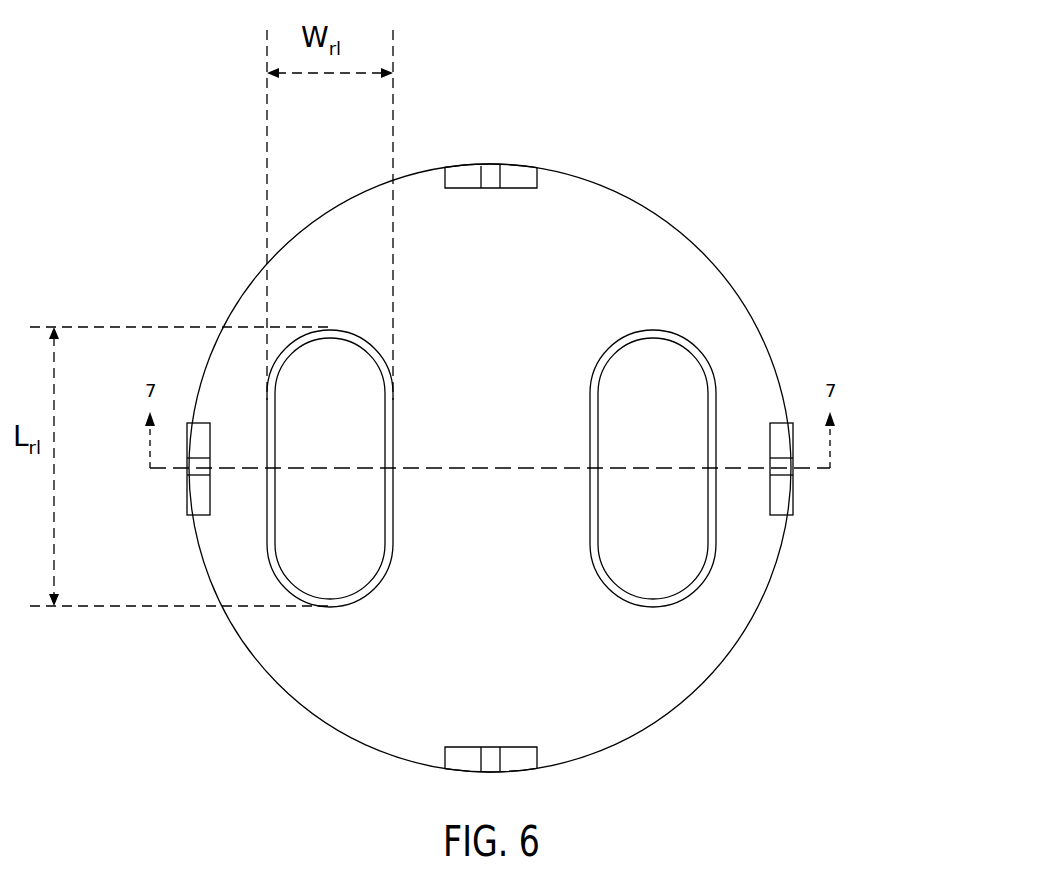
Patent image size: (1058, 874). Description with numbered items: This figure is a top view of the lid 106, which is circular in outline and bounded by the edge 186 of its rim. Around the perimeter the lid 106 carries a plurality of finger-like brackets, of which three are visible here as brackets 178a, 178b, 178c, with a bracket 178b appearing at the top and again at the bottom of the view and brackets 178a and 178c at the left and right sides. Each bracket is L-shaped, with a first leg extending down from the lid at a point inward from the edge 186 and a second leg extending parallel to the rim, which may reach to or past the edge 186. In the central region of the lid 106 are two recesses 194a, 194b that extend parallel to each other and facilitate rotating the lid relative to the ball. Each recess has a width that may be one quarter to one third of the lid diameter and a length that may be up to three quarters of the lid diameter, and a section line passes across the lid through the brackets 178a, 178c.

The lid 106 is at (672, 72).
The edge 186 is at (751, 317).
The finger-like bracket 178a is at (205, 510).
The finger-like bracket 178b is at (528, 160).
The finger-like bracket 178c is at (780, 512).
The recess 194a is at (370, 542).
The recess 194b is at (628, 573).